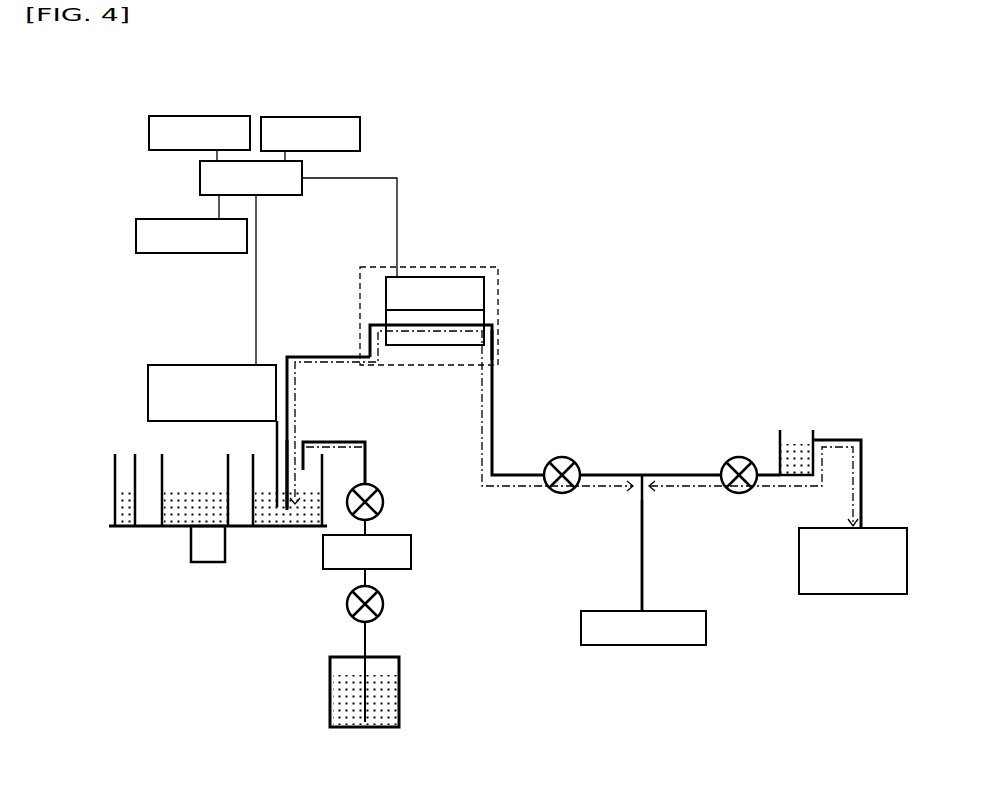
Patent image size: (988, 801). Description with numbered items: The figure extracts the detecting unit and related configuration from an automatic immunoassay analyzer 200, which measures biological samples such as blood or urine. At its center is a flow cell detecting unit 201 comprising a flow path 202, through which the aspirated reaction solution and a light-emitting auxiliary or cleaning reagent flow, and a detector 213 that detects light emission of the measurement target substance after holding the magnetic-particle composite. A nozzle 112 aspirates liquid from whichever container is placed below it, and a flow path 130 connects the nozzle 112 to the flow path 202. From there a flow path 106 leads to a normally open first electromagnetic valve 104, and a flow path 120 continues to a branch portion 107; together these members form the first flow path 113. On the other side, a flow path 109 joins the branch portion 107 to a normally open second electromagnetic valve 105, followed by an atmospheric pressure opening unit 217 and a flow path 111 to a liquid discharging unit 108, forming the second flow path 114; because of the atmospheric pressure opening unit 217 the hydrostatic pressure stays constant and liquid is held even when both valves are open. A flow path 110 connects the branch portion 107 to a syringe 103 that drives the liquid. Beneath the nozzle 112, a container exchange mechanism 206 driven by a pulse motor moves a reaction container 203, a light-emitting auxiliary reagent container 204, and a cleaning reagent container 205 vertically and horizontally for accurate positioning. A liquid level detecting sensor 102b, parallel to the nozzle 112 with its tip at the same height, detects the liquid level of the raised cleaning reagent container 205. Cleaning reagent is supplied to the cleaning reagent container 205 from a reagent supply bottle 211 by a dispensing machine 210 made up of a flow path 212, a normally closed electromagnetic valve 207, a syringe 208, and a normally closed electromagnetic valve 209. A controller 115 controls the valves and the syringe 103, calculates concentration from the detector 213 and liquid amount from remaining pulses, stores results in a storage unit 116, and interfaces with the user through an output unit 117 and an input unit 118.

The output unit 117 is at (217, 116).
The input unit 118 is at (311, 117).
The controller 115 is at (200, 178).
The storage unit 116 is at (136, 232).
The liquid level detecting sensor 102b is at (148, 412).
The automatic immunoassay analyzer 200 is at (508, 300).
The detector 213 is at (484, 292).
The flow cell detecting unit 201 is at (415, 275).
The flow path 202 is at (443, 325).
The flow path 130 is at (310, 356).
The nozzle 112 is at (286, 430).
The flow path 106 is at (494, 402).
The first electromagnetic valve 104 is at (563, 456).
The flow path 120 is at (597, 471).
The branch portion 107 is at (640, 471).
The flow path 109 is at (690, 471).
The second electromagnetic valve 105 is at (740, 456).
The atmospheric pressure opening unit 217 is at (795, 440).
The flow path 111 is at (820, 438).
The liquid discharging unit 108 is at (857, 595).
The first flow path 113 is at (512, 490).
The second flow path 114 is at (770, 489).
The flow path 110 is at (644, 570).
The syringe 103 is at (640, 648).
The reaction container 203 is at (131, 529).
The light-emitting auxiliary reagent container 204 is at (181, 529).
The cleaning reagent container 205 is at (288, 529).
The container exchange mechanism 206 is at (212, 545).
The flow path 212 is at (367, 470).
The electromagnetic valve 207 is at (384, 502).
The syringe 208 is at (411, 556).
The electromagnetic valve 209 is at (384, 603).
The dispensing machine 210 is at (332, 639).
The reagent supply bottle 211 is at (400, 694).